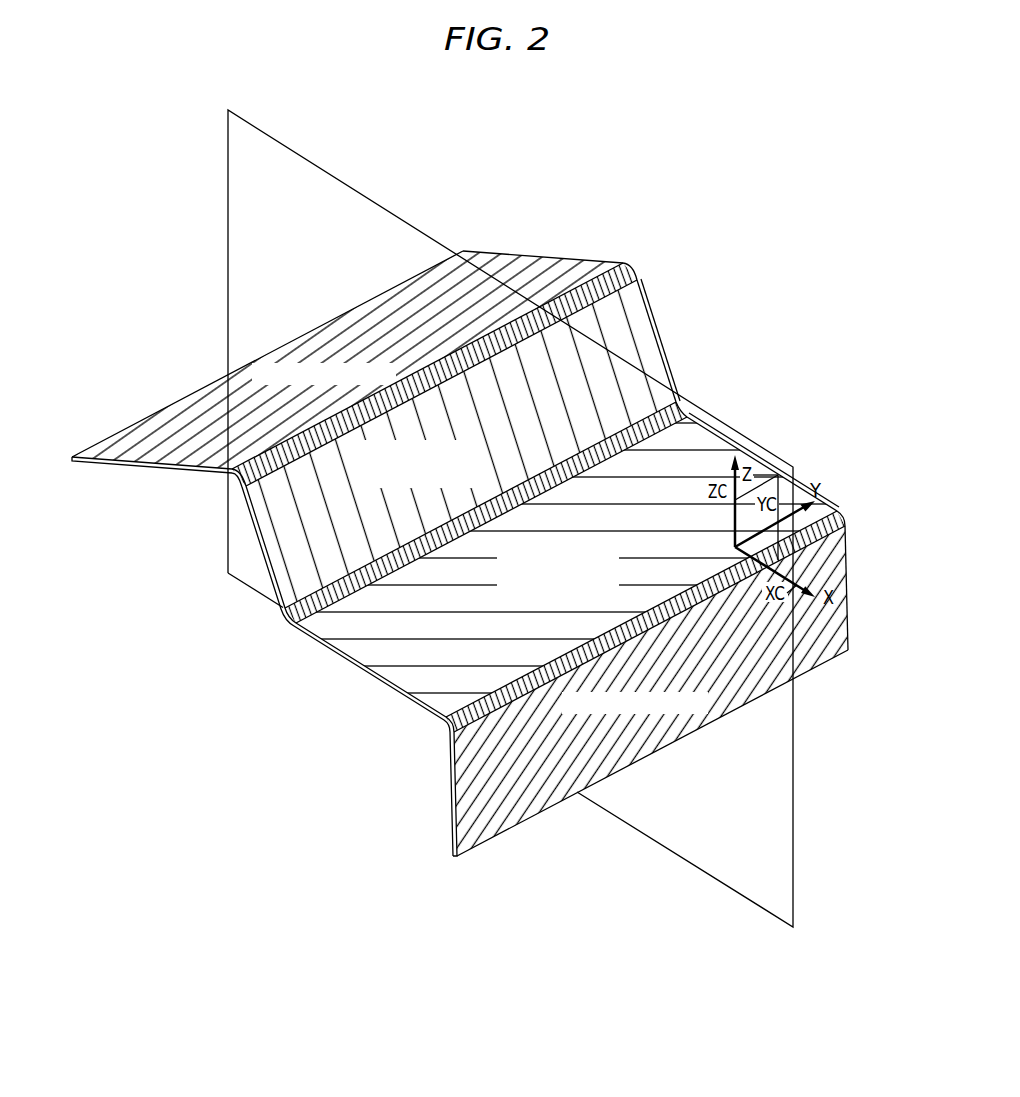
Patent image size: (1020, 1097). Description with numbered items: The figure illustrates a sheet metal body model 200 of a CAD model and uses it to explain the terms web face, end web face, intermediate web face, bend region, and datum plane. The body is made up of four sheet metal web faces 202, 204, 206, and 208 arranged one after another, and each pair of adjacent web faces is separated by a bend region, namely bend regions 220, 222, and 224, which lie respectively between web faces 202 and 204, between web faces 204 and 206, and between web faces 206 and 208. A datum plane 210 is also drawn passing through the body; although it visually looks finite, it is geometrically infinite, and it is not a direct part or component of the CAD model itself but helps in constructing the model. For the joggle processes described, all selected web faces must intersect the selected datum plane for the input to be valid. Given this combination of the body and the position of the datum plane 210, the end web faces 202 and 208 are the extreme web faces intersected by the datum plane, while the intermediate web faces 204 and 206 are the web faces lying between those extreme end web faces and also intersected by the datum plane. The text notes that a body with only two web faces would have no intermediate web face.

The sheet metal body model 200 is at (203, 352).
The end web face 202 is at (115, 443).
The intermediate web face 204 is at (283, 557).
The intermediate web face 206 is at (390, 658).
The end web face 208 is at (473, 837).
The datum plane 210 is at (238, 190).
The bend region 220 is at (634, 266).
The bend region 222 is at (683, 404).
The bend region 224 is at (841, 517).